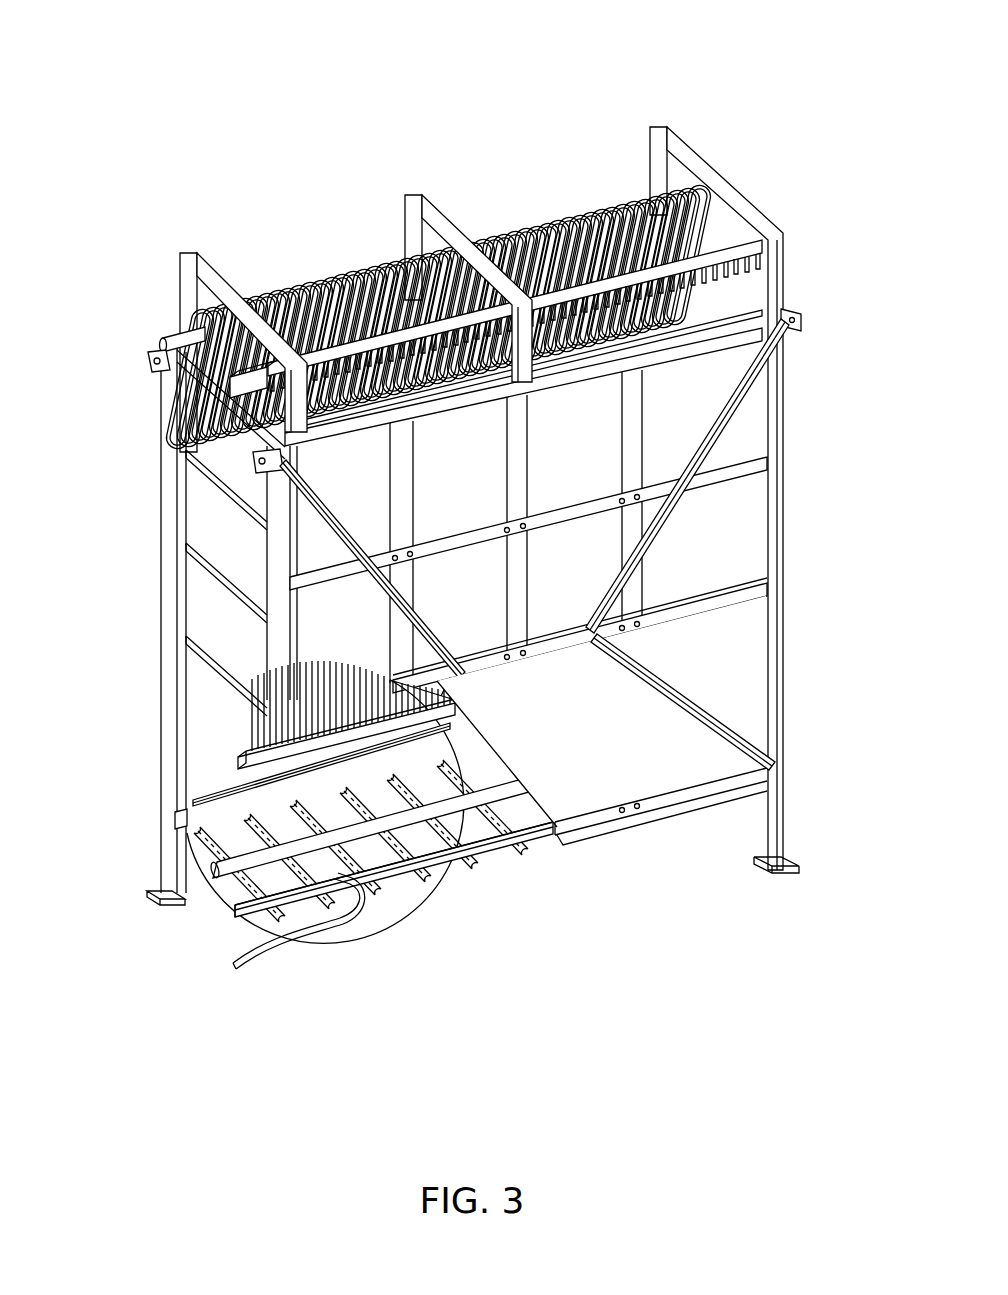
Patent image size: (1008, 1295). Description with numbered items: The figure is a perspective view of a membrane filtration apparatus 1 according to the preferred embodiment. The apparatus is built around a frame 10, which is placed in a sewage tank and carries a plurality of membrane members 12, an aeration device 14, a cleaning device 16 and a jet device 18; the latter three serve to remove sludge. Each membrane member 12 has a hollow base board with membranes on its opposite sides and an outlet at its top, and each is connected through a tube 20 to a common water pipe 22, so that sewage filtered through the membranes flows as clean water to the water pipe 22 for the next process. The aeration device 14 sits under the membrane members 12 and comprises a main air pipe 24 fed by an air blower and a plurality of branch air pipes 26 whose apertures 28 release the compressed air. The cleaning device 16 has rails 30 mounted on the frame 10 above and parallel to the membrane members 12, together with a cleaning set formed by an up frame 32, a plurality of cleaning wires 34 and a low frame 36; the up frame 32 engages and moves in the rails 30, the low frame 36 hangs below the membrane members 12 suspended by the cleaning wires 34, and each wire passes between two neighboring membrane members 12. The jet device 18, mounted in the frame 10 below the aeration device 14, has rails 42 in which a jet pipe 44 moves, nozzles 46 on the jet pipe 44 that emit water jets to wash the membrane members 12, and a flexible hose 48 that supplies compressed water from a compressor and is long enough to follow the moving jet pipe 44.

The membrane filtration apparatus 1 is at (668, 86).
The frame 10 is at (753, 533).
The membrane members 12 is at (262, 417).
The aeration device 14 is at (222, 897).
The cleaning device 16 is at (468, 174).
The jet device 18 is at (370, 928).
The tube 20 is at (182, 332).
The water pipe 22 is at (172, 336).
The main air pipe 24 is at (215, 856).
The branch air pipes 26 is at (260, 903).
The apertures 28 is at (200, 846).
The rails 30 is at (188, 254).
The up frame 32 is at (742, 244).
The cleaning wires 34 is at (247, 723).
The low frame 36 is at (240, 755).
The rails 42 is at (212, 793).
The jet pipe 44 is at (352, 878).
The nozzles 46 is at (452, 850).
The hose 48 is at (324, 928).